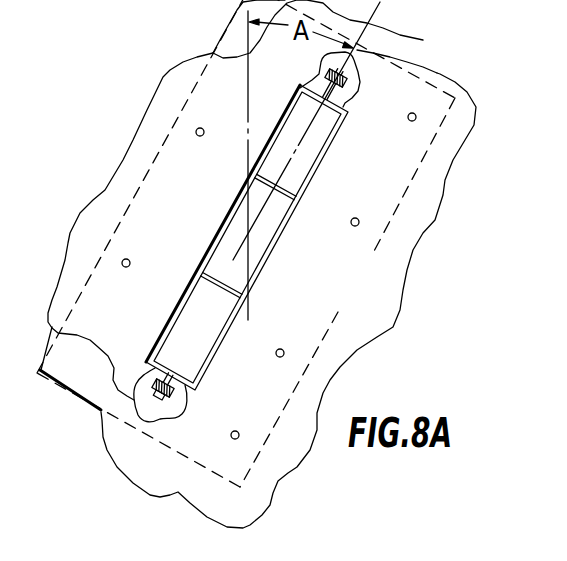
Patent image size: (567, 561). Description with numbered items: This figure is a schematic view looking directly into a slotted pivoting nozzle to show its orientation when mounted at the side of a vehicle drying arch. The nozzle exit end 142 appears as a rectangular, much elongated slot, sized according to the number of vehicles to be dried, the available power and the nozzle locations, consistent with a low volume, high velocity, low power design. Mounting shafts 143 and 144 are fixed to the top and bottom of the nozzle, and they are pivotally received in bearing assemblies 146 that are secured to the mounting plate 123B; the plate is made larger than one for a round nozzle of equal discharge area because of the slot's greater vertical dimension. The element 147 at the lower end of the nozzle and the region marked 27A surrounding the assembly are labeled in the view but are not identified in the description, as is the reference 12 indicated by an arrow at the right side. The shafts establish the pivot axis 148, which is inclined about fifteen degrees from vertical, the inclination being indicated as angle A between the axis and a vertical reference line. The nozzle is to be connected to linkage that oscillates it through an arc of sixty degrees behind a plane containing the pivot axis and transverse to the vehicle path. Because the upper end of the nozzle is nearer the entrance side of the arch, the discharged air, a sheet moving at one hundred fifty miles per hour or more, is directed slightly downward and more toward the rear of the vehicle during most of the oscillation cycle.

The door assembly 12 is at (428, 342).
The door panel portion 27A is at (283, 465).
The mounting plate 123B is at (92, 390).
The nozzle exit end 142 is at (271, 246).
The mounting shaft 143 is at (347, 72).
The mounting shaft 144 is at (155, 402).
The bearing assembly 146 is at (354, 98).
The lower mounting tab 147 is at (115, 369).
The pivot axis 148 is at (336, 36).